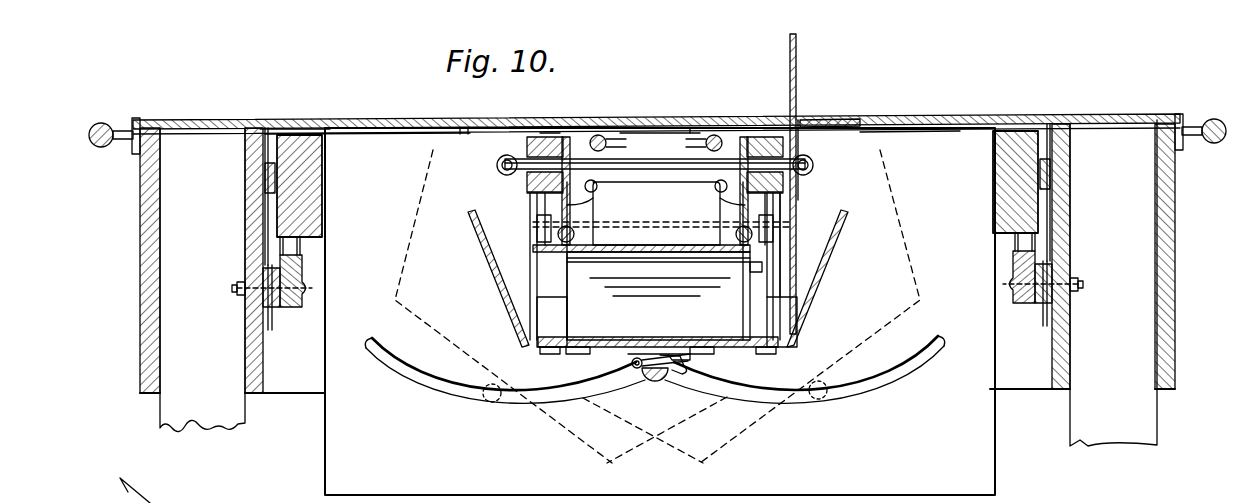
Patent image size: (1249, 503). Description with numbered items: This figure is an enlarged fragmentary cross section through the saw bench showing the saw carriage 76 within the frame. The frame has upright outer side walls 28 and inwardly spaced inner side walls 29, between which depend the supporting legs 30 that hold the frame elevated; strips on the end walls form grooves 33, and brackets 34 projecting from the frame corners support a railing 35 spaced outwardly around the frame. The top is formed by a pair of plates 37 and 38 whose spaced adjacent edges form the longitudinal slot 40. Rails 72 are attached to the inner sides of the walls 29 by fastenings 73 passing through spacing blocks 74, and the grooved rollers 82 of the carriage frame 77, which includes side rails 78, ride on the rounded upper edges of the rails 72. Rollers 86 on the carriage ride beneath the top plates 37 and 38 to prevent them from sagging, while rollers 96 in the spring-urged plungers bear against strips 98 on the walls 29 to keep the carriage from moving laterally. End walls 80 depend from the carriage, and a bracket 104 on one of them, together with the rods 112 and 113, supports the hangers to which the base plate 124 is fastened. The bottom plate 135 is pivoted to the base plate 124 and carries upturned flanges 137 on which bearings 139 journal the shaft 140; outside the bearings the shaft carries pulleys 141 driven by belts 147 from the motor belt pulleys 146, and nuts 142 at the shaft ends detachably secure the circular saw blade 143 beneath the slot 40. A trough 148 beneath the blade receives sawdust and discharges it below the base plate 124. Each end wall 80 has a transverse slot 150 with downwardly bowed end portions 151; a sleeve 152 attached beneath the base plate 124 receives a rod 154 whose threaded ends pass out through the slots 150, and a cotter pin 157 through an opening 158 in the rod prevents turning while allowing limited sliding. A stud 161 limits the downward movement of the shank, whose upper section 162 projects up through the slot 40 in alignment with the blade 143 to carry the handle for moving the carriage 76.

The outer side walls 28 is at (145, 378).
The inner side walls 29 is at (252, 333).
The supporting legs 30 is at (224, 416).
The grooves 33 is at (130, 477).
The brackets 34 is at (122, 131).
The railing 35 is at (106, 121).
The top plate 37 is at (300, 121).
The top plate 38 is at (983, 118).
The longitudinal slot 40 is at (802, 118).
The rails 72 is at (288, 308).
The fastenings 73 is at (238, 289).
The spacing blocks 74 is at (273, 312).
The saw carriage 76 is at (513, 148).
The carriage frame 77 is at (350, 118).
The side rails 78 is at (324, 192).
The end walls 80 is at (660, 311).
The rollers 82 is at (302, 253).
The rollers 86 is at (668, 122).
The roller 96 is at (322, 168).
The strips 98 is at (262, 172).
The bracket 104 is at (677, 178).
The rod 112 is at (716, 133).
The rod 113 is at (601, 134).
The base plate 124 is at (700, 340).
The bottom plate 135 is at (607, 257).
The upturned flanges 137 is at (560, 250).
The bearing 139 is at (592, 191).
The shaft 140 is at (614, 157).
The pulleys 141 is at (748, 134).
The nuts 142 is at (517, 185).
The circular saw blade 143 is at (799, 112).
The belt pulley 146 is at (540, 230).
The belts 147 is at (543, 136).
The trough 148 is at (480, 254).
The slot 150 is at (390, 366).
The end portions 151 is at (445, 395).
The sleeve 152 is at (670, 382).
The rod 154 is at (652, 380).
The cotter pin 157 is at (631, 363).
The opening 158 is at (657, 352).
The stud 161 is at (768, 268).
The upper section 162 is at (790, 36).